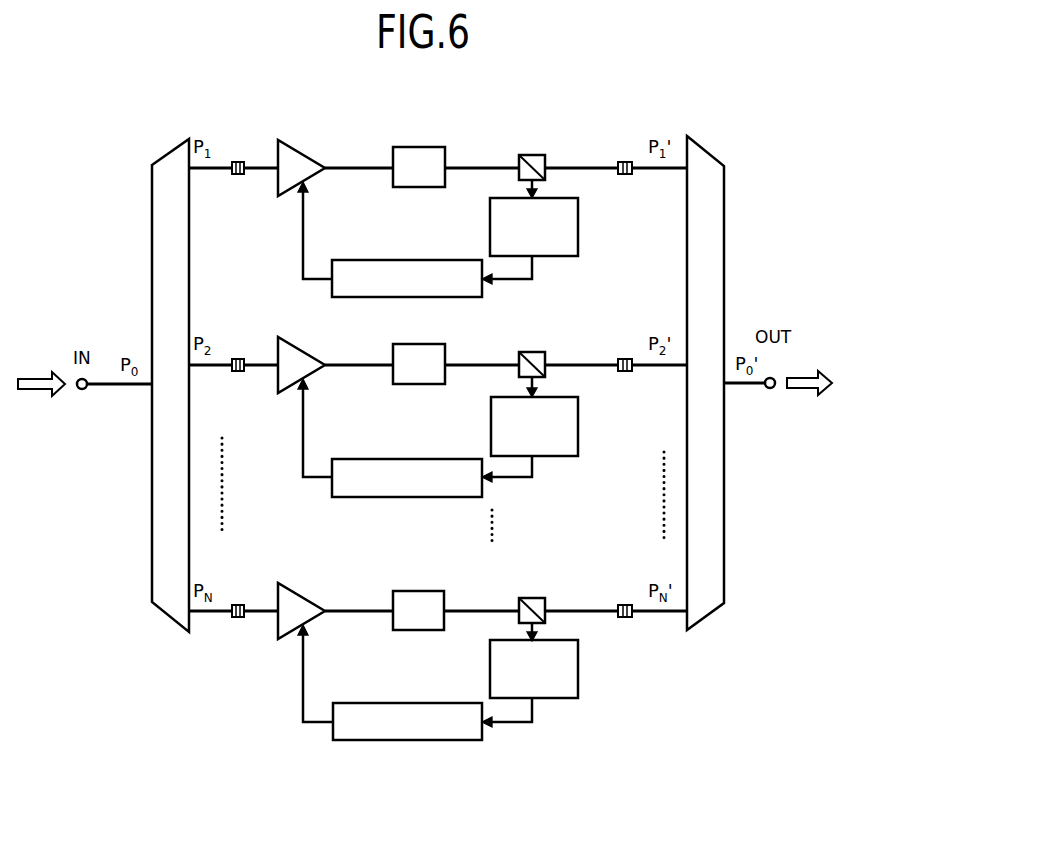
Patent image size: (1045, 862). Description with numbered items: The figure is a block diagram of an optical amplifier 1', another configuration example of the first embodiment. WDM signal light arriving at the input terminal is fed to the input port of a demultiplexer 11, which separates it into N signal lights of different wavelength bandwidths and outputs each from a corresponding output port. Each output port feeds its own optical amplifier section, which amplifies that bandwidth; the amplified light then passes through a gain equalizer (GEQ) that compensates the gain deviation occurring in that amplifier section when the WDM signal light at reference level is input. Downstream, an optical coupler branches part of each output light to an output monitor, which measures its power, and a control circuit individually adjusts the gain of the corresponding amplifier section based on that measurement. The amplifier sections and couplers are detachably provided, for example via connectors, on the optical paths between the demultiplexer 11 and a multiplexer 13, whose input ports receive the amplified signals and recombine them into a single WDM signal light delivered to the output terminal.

The optical amplifier 1' is at (782, 171).
The demultiplexer 11 is at (168, 151).
The multiplexer 13 is at (707, 150).